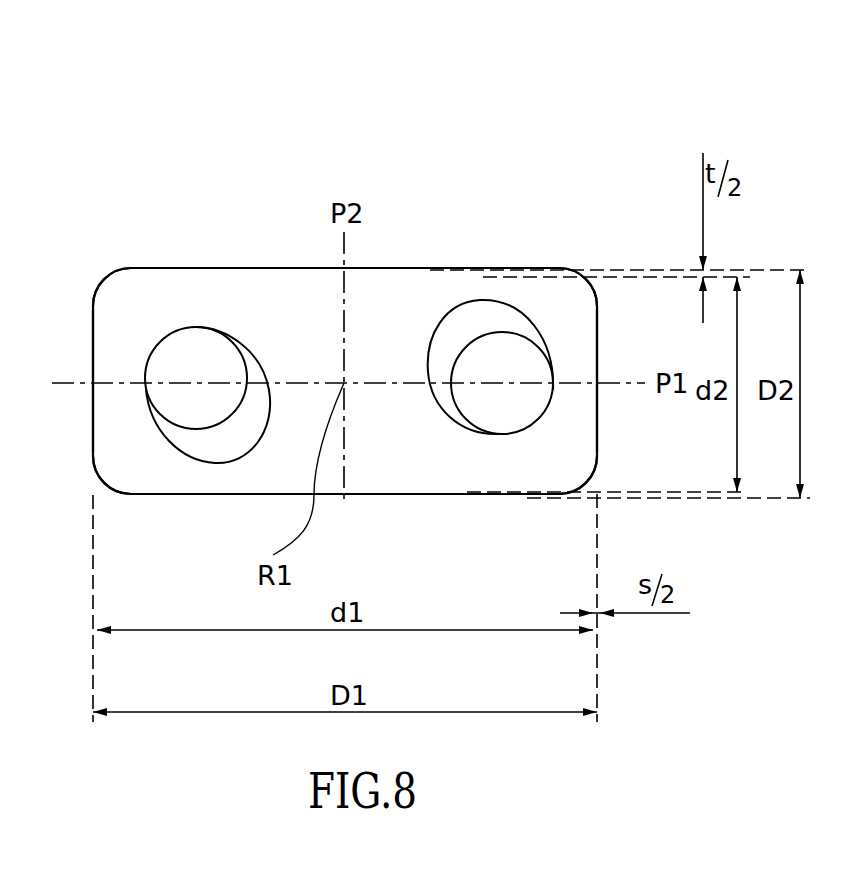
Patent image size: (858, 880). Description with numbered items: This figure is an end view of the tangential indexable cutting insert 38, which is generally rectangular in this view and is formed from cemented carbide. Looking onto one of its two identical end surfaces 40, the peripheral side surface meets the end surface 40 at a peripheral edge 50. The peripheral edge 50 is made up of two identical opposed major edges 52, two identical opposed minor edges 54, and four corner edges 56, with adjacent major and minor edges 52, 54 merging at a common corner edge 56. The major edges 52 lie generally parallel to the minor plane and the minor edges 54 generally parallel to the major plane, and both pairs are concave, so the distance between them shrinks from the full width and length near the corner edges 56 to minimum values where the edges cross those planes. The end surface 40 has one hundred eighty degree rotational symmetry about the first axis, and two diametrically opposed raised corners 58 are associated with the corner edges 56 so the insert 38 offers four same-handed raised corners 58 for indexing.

The tangential indexable cutting insert 38 is at (399, 138).
The end surface 40 is at (396, 292).
The peripheral edge 50 is at (186, 258).
The major edge 52 is at (484, 268).
The minor edge 54 is at (92, 317).
The corner edge 56 is at (578, 274).
The raised corner 58 is at (115, 293).